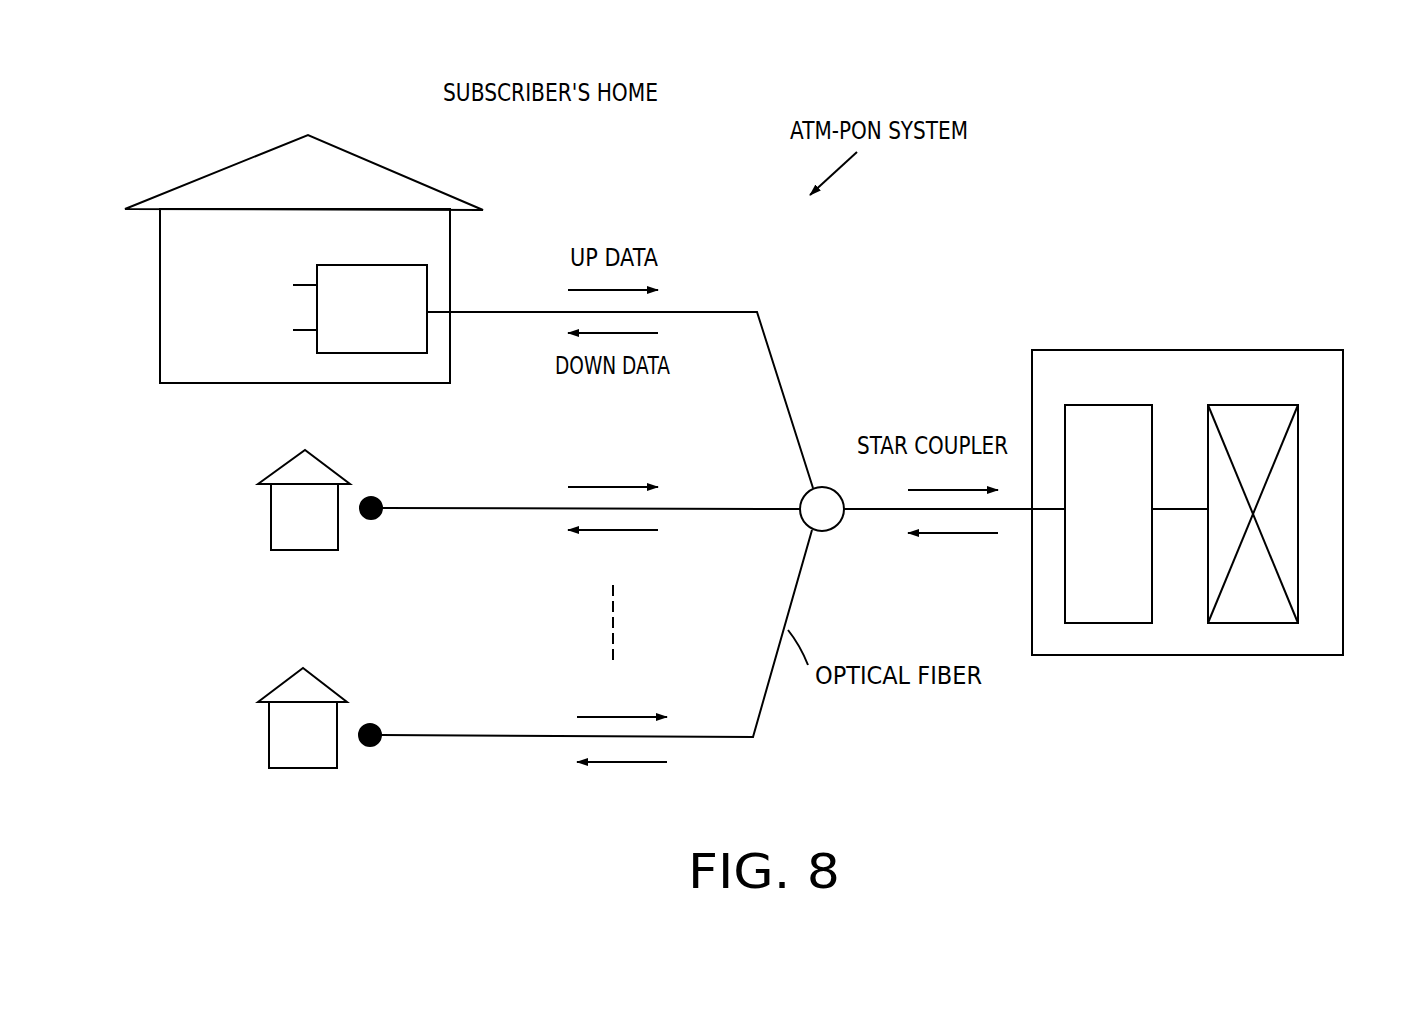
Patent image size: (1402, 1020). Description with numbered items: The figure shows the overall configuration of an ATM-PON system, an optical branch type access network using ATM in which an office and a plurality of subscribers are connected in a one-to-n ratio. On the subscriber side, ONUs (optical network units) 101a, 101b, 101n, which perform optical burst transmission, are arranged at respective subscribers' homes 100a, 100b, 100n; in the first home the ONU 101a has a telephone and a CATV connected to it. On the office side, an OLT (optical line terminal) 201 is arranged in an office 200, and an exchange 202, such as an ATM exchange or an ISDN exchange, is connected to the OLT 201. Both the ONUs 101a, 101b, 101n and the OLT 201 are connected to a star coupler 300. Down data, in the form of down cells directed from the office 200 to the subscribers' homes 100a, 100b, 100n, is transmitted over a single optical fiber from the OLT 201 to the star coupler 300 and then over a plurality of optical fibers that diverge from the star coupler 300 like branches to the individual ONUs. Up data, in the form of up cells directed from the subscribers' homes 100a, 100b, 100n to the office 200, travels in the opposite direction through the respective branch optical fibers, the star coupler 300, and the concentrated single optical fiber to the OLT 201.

The subscriber's home 100a is at (308, 133).
The ONU (optical network unit) 101a is at (372, 292).
The subscriber's home 100b is at (317, 460).
The ONU (optical network unit) 101b is at (381, 497).
The subscriber's home 100n is at (315, 680).
The ONU (optical network unit) 101n is at (372, 722).
The star coupler 300 is at (821, 487).
The office 200 is at (1177, 350).
The OLT (optical line terminal) 201 is at (1109, 495).
The exchange 202 is at (1253, 495).